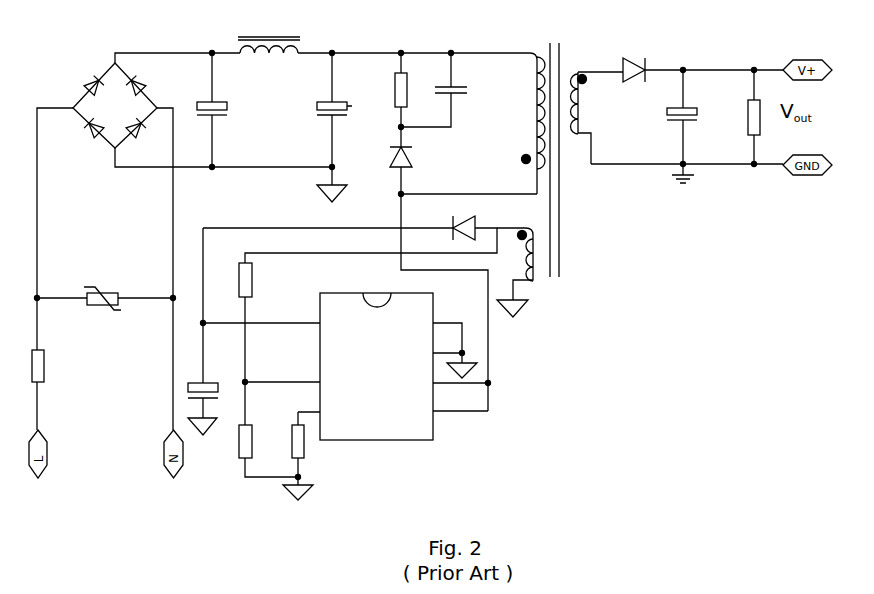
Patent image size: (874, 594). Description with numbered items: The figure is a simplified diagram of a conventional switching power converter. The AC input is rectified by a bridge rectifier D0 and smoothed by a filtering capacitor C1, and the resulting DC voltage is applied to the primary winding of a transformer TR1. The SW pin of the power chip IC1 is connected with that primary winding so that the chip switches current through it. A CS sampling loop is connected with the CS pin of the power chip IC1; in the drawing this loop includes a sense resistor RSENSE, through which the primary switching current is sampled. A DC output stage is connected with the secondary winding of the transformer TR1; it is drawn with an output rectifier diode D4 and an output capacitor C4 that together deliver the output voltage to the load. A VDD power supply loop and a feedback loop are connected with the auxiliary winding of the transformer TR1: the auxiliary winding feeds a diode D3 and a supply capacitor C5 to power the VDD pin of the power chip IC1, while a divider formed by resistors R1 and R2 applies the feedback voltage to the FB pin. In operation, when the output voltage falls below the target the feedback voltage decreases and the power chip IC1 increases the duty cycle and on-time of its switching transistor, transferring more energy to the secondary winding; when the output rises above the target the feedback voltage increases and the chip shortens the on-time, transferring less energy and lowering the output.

The bridge rectifier D0 is at (115, 105).
The filtering capacitor C1 is at (224, 110).
The transformer TR1 is at (560, 173).
The output rectifier diode D4 is at (653, 64).
The output capacitor C4 is at (693, 117).
The auxiliary diode D3 is at (464, 221).
The feedback resistor R1 is at (258, 280).
The feedback resistor R2 is at (258, 441).
The current sense resistor RSENSE is at (322, 448).
The supply capacitor C5 is at (213, 409).
The power chip IC1 is at (405, 375).